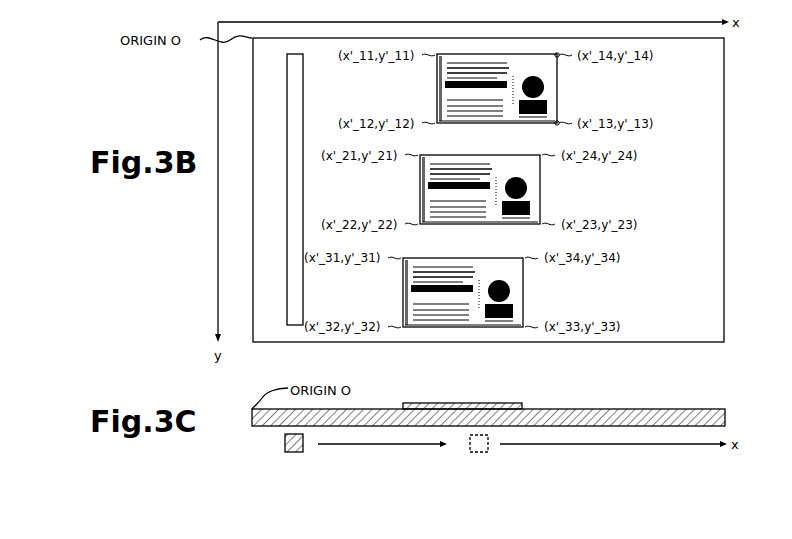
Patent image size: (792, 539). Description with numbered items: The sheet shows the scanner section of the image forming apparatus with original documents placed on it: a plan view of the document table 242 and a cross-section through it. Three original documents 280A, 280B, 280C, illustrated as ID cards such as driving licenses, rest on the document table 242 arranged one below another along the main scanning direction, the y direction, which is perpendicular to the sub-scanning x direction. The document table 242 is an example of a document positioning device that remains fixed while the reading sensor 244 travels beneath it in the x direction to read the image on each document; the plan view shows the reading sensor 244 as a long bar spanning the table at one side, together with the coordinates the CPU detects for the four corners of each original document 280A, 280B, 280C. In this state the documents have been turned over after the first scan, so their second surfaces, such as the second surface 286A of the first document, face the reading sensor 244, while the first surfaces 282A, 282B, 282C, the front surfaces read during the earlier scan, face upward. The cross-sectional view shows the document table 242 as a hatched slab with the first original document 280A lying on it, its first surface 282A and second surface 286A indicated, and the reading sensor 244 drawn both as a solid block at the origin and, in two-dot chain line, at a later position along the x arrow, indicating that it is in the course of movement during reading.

In FIG. 3B, the document table 242 is at (690, 0).
In FIG. 3B, the reading sensor 244 is at (297, 0).
In FIG. 3C, the reading sensor 244 is at (284, 444).
In FIG. 3B, the original document 280A is at (497, 55).
In FIG. 3C, the original document 280A is at (497, 403).
In FIG. 3B, the original document 280B is at (490, 155).
In FIG. 3B, the original document 280C is at (462, 258).
In FIG. 3B, the first surface 282A is at (463, 68).
In FIG. 3C, the first surface 282A is at (497, 410).
In FIG. 3B, the first surface 282B is at (455, 168).
In FIG. 3B, the first surface 282C is at (421, 272).
In FIG. 3C, the second surface 286A is at (463, 403).